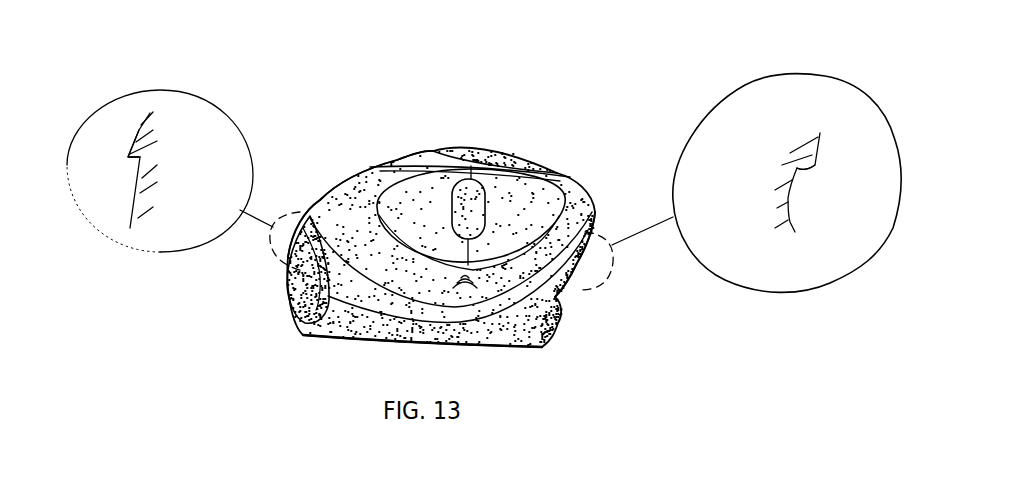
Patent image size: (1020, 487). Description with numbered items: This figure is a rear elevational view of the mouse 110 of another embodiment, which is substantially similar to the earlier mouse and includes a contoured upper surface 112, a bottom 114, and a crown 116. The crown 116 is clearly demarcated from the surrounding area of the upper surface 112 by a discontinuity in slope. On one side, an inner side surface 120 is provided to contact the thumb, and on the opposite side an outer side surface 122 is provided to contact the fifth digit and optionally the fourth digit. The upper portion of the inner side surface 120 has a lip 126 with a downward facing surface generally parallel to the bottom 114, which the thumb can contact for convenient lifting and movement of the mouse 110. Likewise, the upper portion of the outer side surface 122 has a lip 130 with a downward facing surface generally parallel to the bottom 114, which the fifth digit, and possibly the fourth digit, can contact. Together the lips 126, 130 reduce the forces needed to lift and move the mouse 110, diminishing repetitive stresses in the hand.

The mouse 110 is at (665, 54).
The contoured upper surface 112 is at (416, 151).
The bottom 114 is at (478, 348).
The crown 116 is at (470, 147).
The inner side surface 120 is at (790, 202).
The outer side surface 122 is at (138, 190).
The lip 126 is at (812, 170).
The lip 130 is at (133, 156).